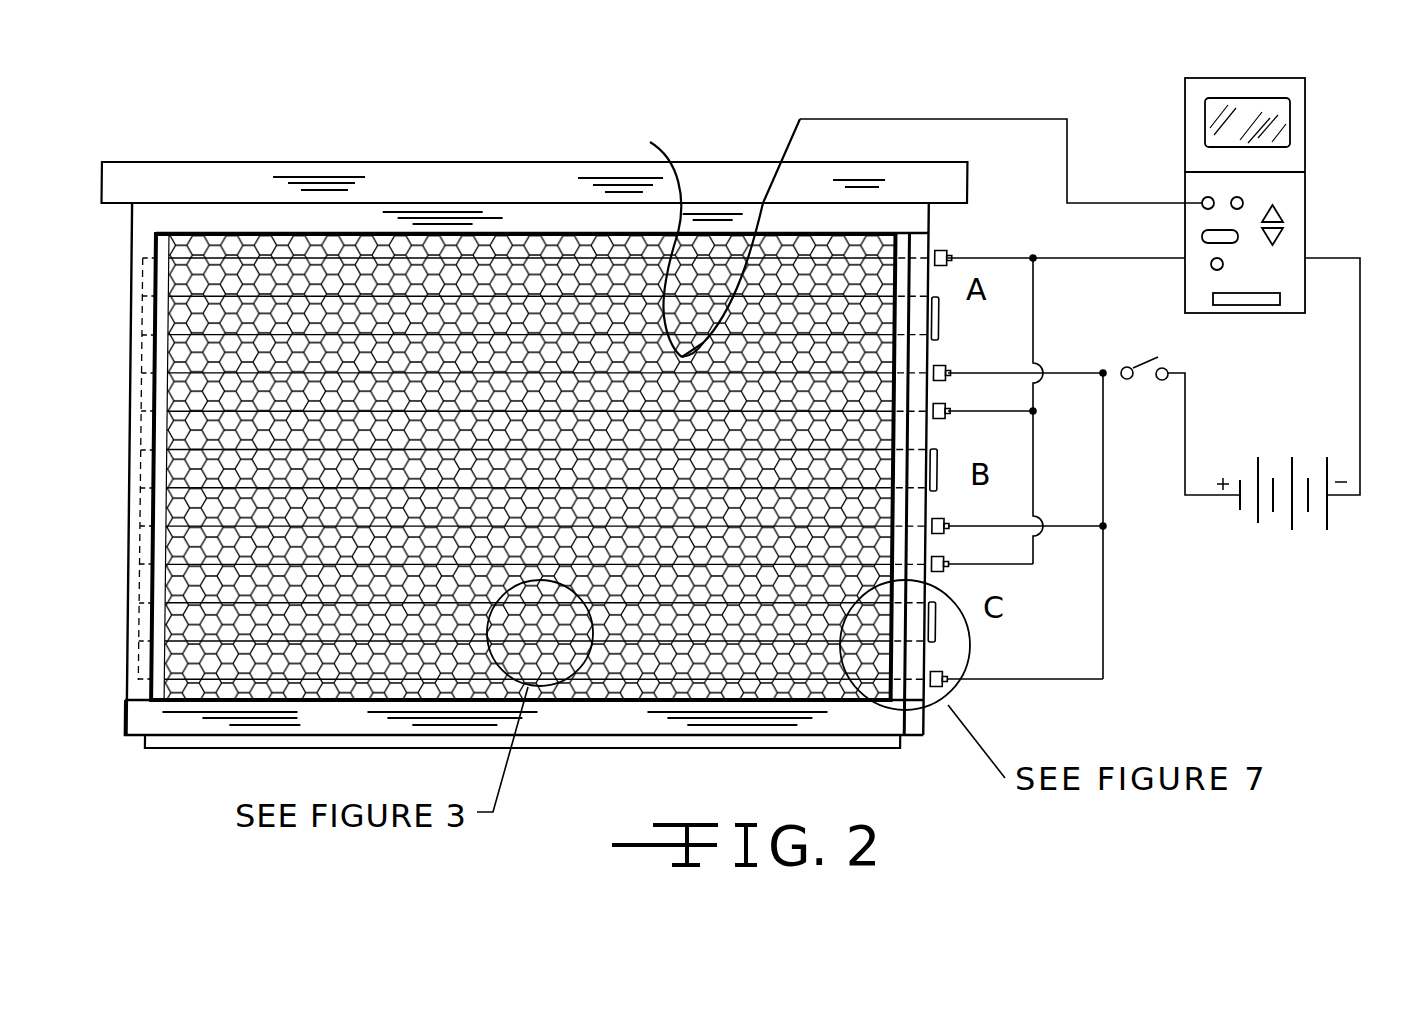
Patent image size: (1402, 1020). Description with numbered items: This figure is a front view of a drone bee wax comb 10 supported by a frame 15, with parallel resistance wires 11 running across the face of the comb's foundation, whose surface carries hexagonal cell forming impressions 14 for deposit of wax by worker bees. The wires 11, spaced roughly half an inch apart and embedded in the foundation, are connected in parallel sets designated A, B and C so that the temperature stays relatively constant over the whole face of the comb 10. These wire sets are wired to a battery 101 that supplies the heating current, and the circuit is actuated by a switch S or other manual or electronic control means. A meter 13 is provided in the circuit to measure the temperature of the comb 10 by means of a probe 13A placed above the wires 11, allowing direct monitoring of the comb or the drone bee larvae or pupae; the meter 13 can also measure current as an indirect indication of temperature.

The comb 10 is at (773, 353).
The resistance wires 11 is at (237, 258).
The meter 13 is at (1290, 188).
The temperature probe 13A is at (775, 197).
The cell forming impressions 14 is at (655, 238).
The frame 15 is at (129, 410).
The battery 101 is at (1275, 523).
The switch S is at (1147, 363).